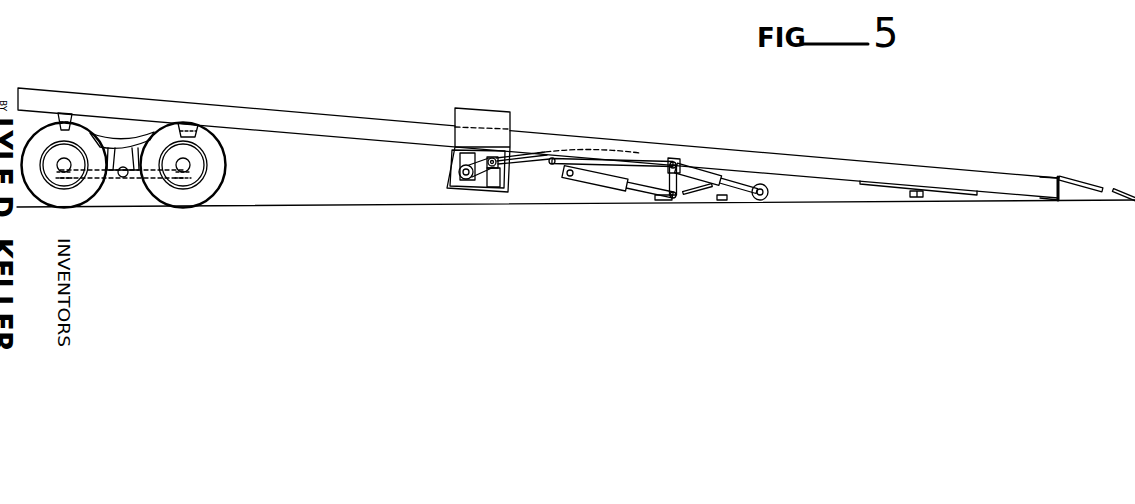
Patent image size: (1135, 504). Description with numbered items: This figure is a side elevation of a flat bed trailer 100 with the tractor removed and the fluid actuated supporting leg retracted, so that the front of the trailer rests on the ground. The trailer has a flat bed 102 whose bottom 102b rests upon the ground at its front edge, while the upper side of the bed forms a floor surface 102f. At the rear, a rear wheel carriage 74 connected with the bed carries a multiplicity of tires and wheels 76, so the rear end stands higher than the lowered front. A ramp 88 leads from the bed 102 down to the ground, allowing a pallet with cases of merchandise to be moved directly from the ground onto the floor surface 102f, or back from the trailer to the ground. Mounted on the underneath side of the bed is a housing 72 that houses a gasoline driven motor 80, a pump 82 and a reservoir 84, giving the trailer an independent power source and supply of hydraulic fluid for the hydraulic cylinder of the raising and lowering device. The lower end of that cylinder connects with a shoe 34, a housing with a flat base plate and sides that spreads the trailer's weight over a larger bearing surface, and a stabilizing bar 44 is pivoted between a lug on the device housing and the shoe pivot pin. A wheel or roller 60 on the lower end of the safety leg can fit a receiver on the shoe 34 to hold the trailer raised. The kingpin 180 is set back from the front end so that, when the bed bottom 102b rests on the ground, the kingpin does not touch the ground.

The flat bed trailer 100 is at (746, 148).
The flat bed 102 is at (862, 172).
The floor surface 102f is at (1055, 177).
The bottom 102b is at (1057, 200).
The ramp 88 is at (1072, 178).
The kingpin 180 is at (913, 198).
The rear wheel carriage 74 is at (118, 136).
The tires and wheels 76 is at (77, 193).
The housing 72 is at (444, 159).
The gasoline driven motor 80 is at (463, 158).
The pump 82 is at (493, 157).
The reservoir 84 is at (492, 188).
The stabilizing bar 44 is at (590, 179).
The wheel or roller 60 is at (769, 192).
The shoe 34 is at (729, 197).